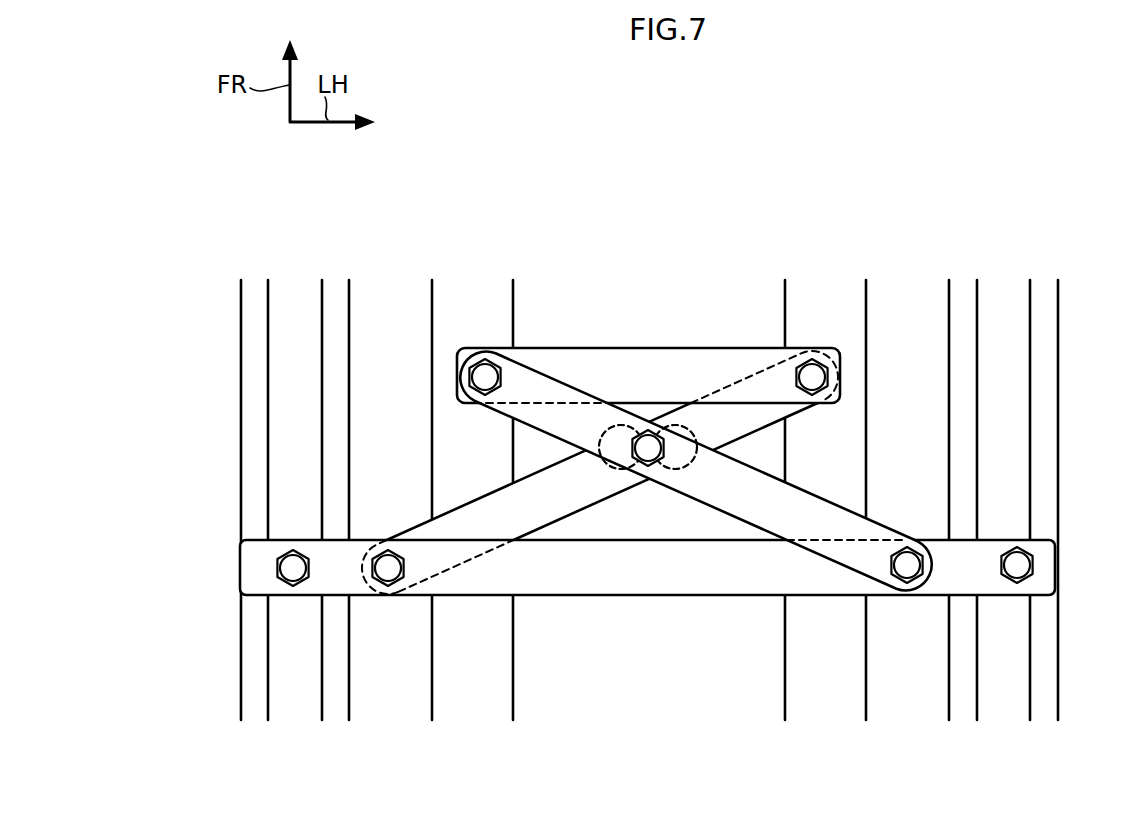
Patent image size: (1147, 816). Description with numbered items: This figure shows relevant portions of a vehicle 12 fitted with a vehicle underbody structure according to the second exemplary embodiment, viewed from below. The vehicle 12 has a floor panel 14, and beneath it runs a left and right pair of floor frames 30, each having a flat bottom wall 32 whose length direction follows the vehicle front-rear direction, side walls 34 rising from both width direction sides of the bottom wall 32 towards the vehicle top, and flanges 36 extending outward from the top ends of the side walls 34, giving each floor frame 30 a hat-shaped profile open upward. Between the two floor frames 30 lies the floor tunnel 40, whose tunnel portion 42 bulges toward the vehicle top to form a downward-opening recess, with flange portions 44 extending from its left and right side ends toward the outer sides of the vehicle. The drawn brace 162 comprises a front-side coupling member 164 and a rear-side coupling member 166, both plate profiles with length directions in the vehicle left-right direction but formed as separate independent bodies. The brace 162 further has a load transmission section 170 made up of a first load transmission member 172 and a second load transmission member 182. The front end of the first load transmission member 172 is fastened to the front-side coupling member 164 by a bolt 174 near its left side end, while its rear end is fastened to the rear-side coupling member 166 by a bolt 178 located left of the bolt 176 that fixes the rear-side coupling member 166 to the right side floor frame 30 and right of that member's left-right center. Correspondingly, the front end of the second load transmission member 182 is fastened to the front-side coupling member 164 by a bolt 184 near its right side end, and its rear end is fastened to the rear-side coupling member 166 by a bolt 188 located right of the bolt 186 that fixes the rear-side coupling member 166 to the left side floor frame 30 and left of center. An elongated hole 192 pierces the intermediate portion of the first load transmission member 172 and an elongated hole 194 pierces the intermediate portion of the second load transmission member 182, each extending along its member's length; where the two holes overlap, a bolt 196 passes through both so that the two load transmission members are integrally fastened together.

The vehicle 12 is at (988, 220).
The floor panel 14 is at (908, 295).
The floor frame 30 is at (364, 279).
The bottom wall 32 is at (306, 322).
The side wall 34 is at (268, 300).
The flange 36 is at (241, 370).
The floor tunnel 40 is at (479, 246).
The tunnel portion 42 is at (765, 297).
The flange portion 44 is at (518, 300).
The brace 162 is at (729, 314).
The front-side coupling member 164 is at (651, 348).
The rear-side coupling member 166 is at (640, 580).
The load transmission section 170 is at (472, 474).
The first load transmission member 172 is at (552, 515).
The bolt 174 is at (812, 345).
The bolt 176 is at (293, 585).
The bolt 178 is at (388, 585).
The second load transmission member 182 is at (750, 512).
The bolt 184 is at (487, 372).
The bolt 186 is at (1017, 582).
The bolt 188 is at (907, 582).
The elongated hole 192 is at (680, 440).
The elongated hole 194 is at (618, 448).
The bolt 196 is at (648, 466).